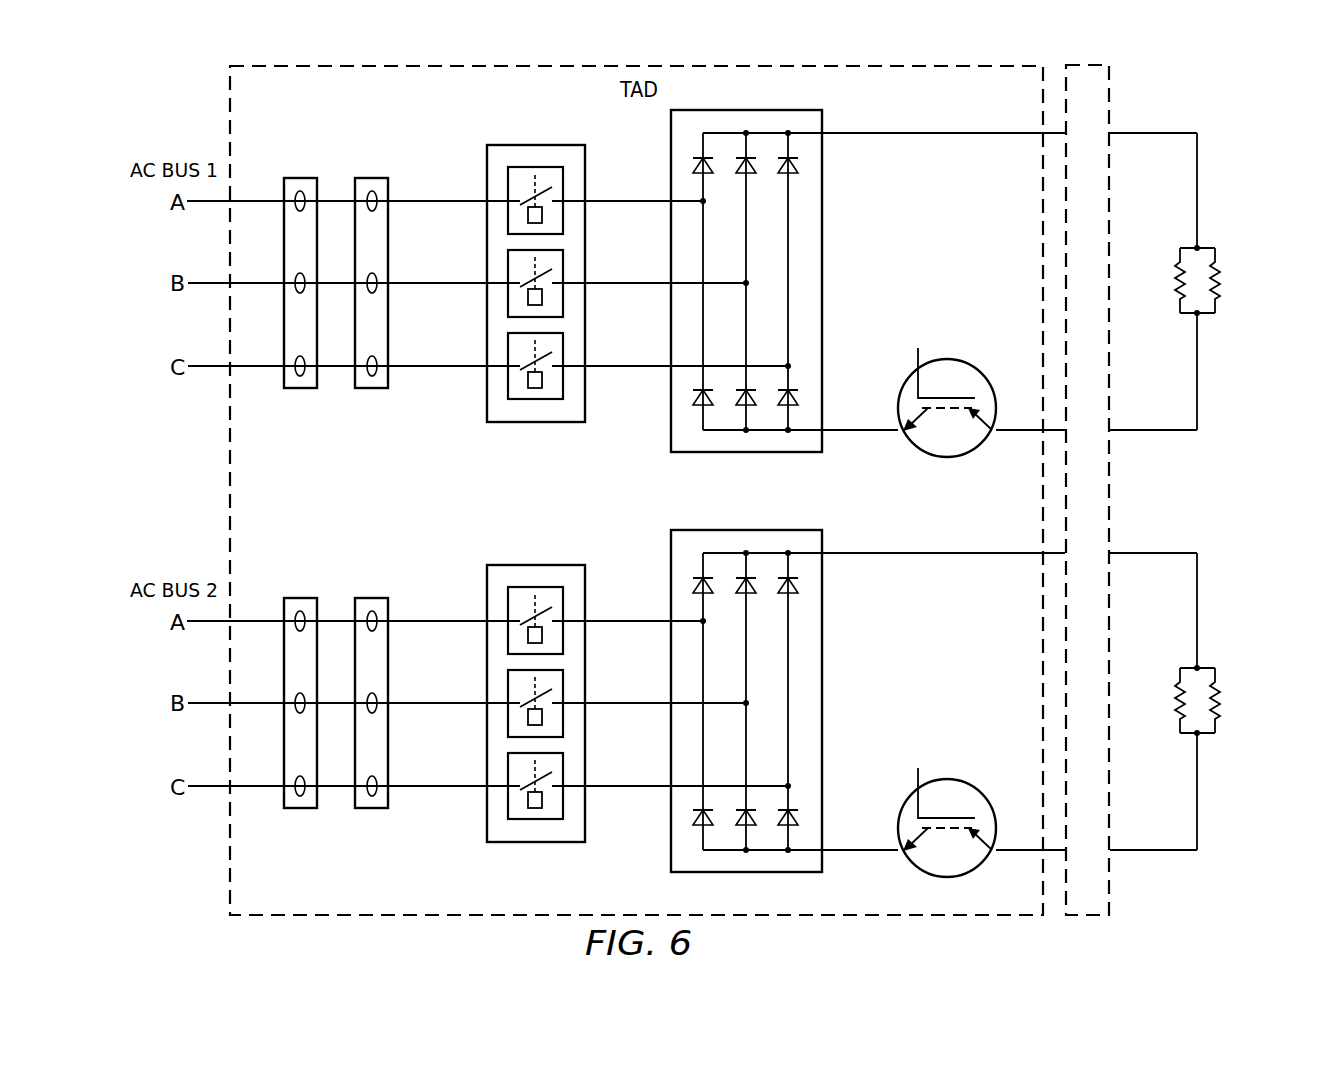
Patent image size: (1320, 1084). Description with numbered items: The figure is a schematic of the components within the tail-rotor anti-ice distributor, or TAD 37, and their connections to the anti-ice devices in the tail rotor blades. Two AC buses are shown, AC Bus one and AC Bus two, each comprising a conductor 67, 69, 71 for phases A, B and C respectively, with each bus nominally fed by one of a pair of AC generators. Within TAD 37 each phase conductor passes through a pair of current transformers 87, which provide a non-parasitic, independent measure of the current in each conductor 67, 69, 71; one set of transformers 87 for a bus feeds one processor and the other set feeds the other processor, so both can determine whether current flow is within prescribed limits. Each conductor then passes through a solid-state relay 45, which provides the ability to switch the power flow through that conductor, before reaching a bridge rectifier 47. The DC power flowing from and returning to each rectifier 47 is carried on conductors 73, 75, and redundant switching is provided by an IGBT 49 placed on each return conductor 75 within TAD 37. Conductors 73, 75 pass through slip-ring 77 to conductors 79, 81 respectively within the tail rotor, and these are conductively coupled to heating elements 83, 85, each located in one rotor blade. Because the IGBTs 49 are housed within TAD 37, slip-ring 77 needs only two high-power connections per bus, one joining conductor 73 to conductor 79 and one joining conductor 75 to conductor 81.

The tail-rotor anti-ice distributor (TAD) 37 is at (228, 483).
The solid-state relay 45 is at (527, 167).
The bridge rectifier 47 is at (822, 200).
The IGBT 49 is at (900, 410).
The conductor (phase A) 67 is at (437, 200).
The conductor (phase B) 69 is at (437, 282).
The conductor (phase C) 71 is at (437, 368).
The conductor (DC output) 73 is at (934, 131).
The conductor (DC return) 75 is at (852, 432).
The slip-ring 77 is at (1110, 890).
The conductor (within tail rotor) 79 is at (1197, 160).
The conductor (within tail rotor) 81 is at (1197, 405).
The heating element 83 is at (1178, 280).
The heating element 85 is at (1218, 280).
The current transformer 87 is at (300, 191).